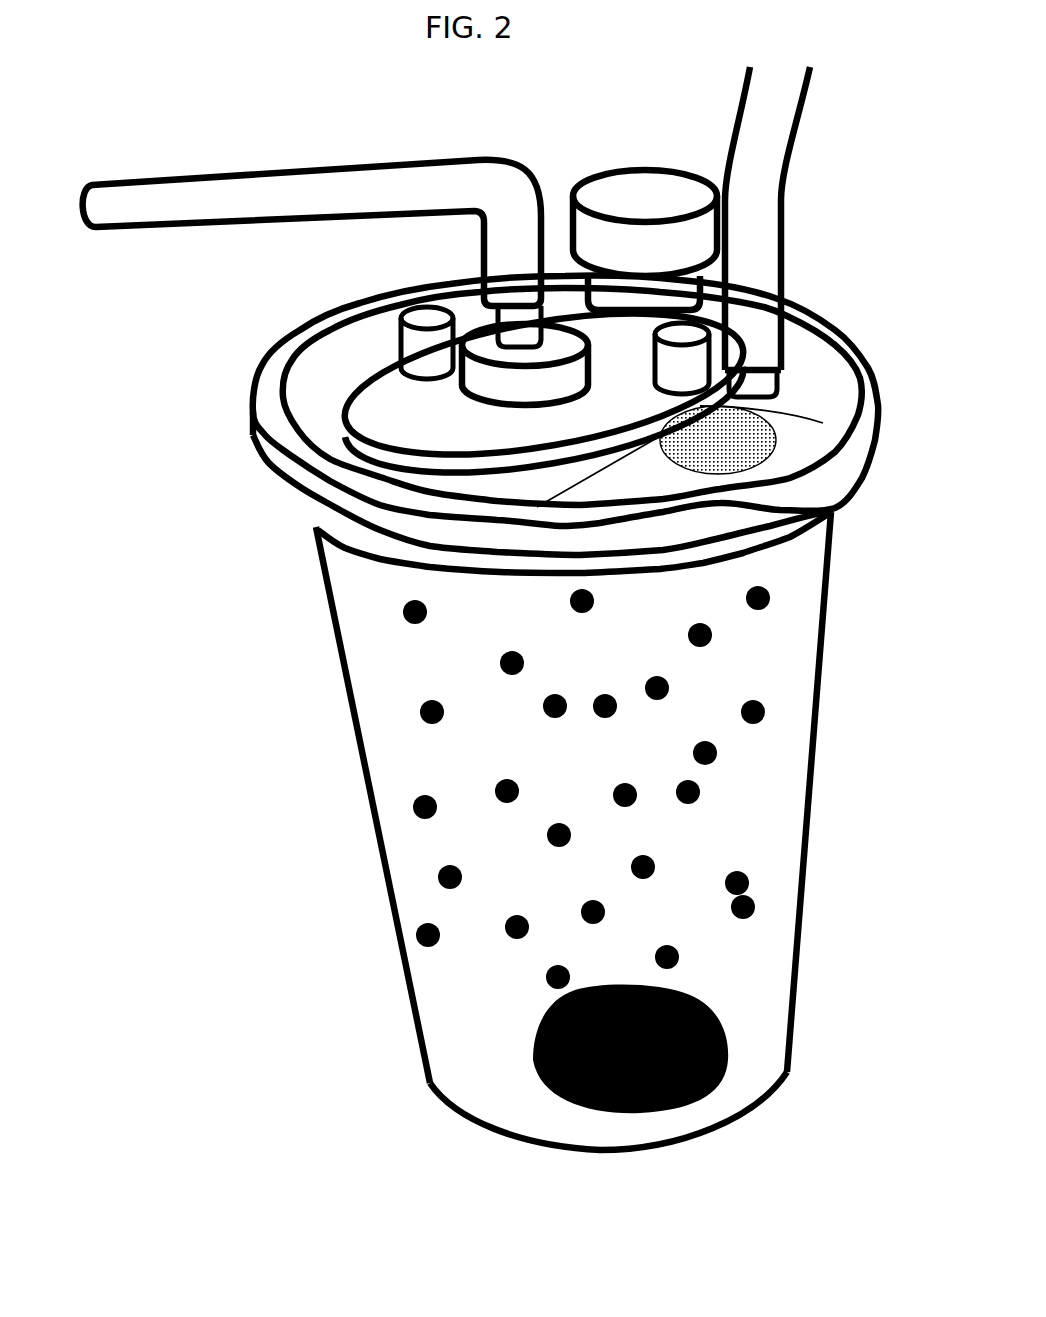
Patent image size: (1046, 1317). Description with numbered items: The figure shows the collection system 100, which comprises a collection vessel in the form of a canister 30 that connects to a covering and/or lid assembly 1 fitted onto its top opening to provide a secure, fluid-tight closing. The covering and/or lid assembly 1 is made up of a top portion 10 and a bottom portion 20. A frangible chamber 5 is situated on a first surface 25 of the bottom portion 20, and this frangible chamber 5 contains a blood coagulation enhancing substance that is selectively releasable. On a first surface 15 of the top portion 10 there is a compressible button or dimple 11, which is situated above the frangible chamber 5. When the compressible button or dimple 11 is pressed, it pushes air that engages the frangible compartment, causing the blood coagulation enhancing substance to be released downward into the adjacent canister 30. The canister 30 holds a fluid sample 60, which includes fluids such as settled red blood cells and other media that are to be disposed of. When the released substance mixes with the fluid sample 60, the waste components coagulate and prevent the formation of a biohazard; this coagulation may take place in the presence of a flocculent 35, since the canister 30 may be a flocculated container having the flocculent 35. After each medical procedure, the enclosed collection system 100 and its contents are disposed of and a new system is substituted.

The covering and/or lid assembly 1 is at (563, 262).
The frangible chamber 5 is at (692, 483).
The top portion 10 is at (321, 378).
The compressible button or dimple 11 is at (777, 440).
The first surface 15 is at (806, 398).
The bottom portion 20 is at (430, 565).
The first surface 25 is at (750, 557).
The canister 30 is at (352, 787).
The flocculent 35 is at (760, 714).
The fluid sample 60 is at (726, 1043).
The collection system 100 is at (222, 596).